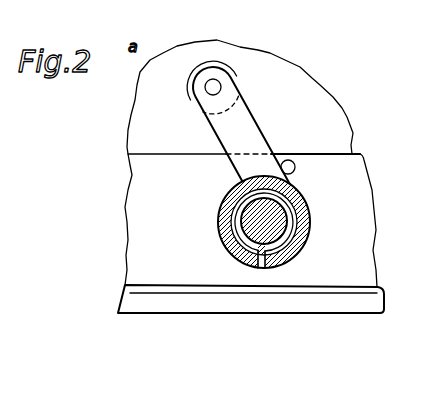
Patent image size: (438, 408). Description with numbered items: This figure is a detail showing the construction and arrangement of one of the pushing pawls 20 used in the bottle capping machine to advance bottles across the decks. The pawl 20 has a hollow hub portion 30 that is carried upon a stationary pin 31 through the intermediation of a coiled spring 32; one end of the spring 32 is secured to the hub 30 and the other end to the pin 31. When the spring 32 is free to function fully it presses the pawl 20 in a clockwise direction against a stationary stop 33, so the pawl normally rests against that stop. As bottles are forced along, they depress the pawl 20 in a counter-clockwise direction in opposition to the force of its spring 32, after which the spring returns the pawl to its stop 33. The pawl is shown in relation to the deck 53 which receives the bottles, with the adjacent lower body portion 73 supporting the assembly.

The pushing pawl 20 is at (242, 133).
The hollow hub portion 30 is at (304, 201).
The stationary pin 31 is at (273, 221).
The coiled spring 32 is at (288, 239).
The stationary stop 33 is at (296, 163).
The deck 53 is at (157, 113).
The lower housing part 73 is at (167, 210).